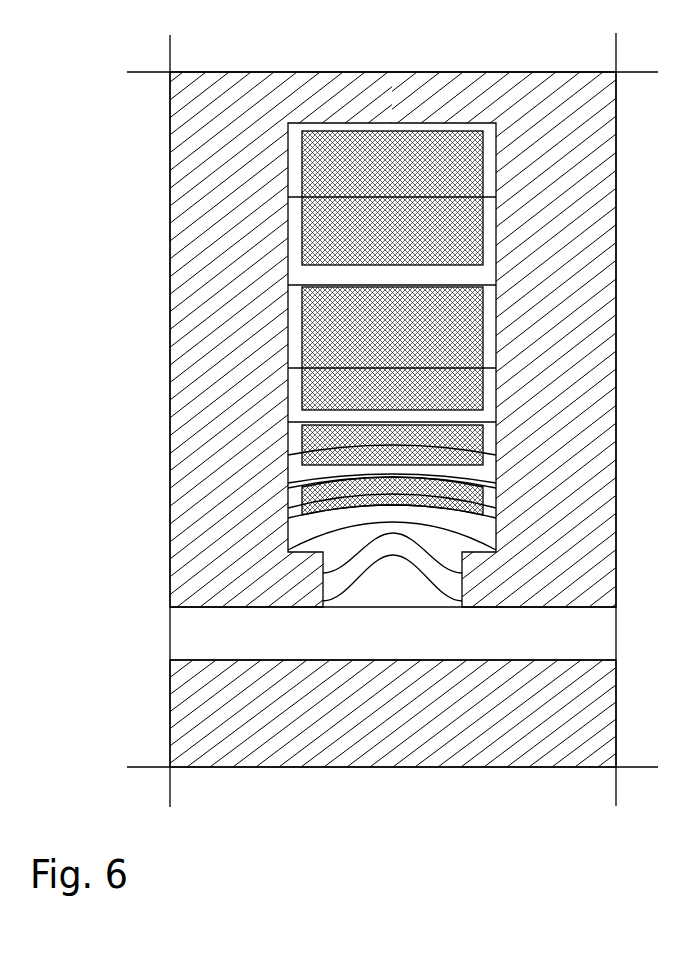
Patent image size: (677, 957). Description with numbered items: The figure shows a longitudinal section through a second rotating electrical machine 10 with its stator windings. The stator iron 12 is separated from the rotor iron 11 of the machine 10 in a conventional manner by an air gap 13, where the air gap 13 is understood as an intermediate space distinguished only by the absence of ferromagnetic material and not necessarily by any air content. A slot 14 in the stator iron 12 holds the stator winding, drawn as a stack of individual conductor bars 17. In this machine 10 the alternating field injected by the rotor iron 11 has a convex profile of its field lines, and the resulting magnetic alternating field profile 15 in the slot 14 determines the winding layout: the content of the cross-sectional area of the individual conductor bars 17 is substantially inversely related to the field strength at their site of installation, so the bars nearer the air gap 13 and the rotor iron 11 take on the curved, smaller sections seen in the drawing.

The rotating electrical machine 10 is at (120, 89).
The rotor iron 11 is at (211, 682).
The stator iron 12 is at (220, 596).
The air gap 13 is at (581, 635).
The slot 14 is at (338, 633).
The magnetic alternating field profile 15 is at (413, 163).
The conductor bars 17 is at (313, 491).